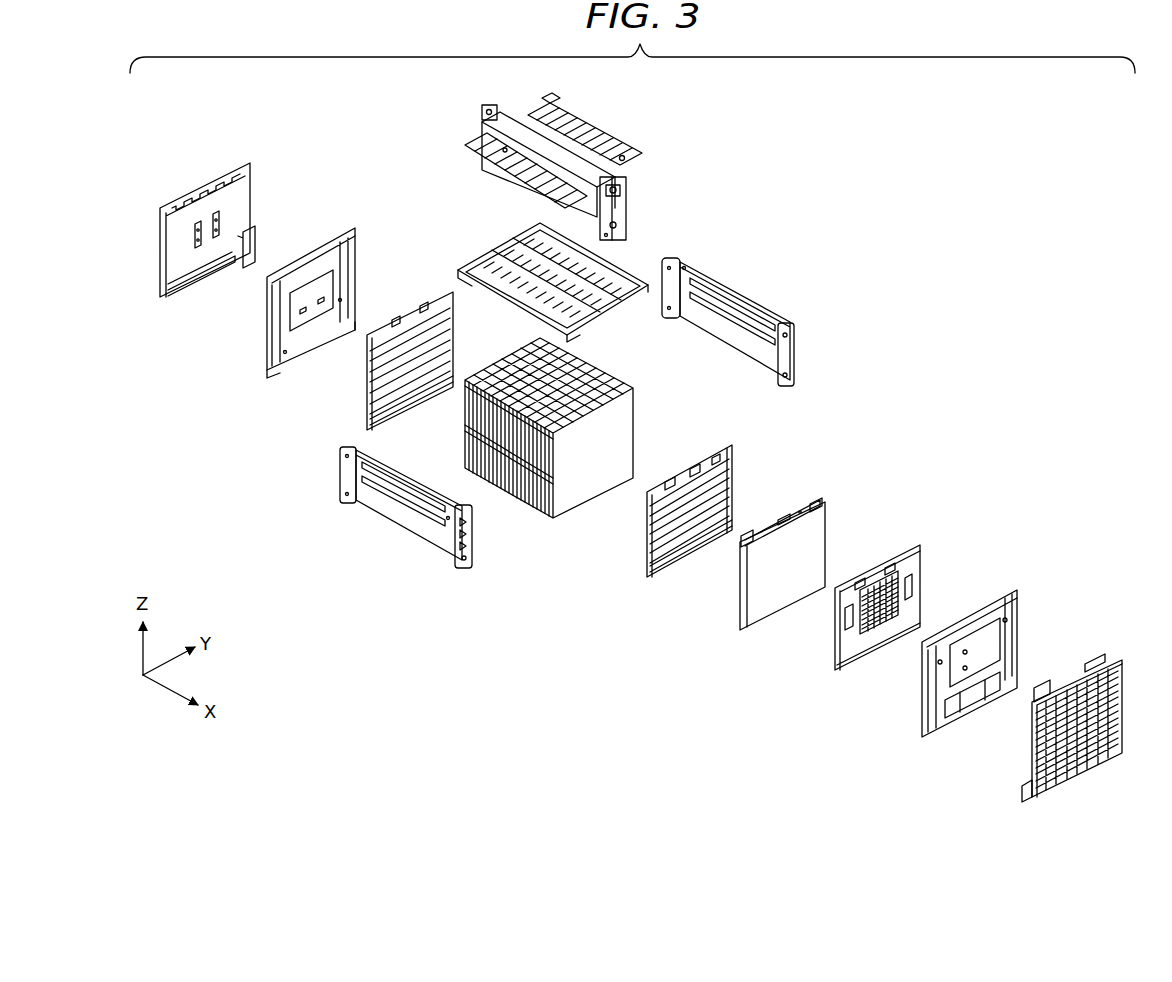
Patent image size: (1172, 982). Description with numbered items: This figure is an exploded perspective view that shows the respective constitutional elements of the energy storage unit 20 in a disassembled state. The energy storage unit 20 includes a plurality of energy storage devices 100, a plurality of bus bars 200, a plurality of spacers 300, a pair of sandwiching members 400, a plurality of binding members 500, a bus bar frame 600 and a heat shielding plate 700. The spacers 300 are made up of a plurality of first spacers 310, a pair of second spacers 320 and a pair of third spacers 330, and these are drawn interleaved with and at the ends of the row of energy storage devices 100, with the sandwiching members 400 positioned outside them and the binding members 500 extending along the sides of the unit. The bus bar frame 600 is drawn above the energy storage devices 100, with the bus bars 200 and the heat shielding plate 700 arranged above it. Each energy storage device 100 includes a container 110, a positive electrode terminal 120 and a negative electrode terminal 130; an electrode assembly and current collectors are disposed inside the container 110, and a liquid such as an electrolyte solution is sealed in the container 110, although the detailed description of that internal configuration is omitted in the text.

The energy storage unit 20 is at (920, 203).
The energy storage device 100 is at (632, 443).
The container 110 is at (757, 590).
The positive electrode terminal 120 is at (812, 506).
The negative electrode terminal 130 is at (742, 543).
The bus bar 200 is at (547, 110).
The spacer 300 is at (658, 460).
The first spacer 310 is at (657, 366).
The second spacer 320 is at (247, 170).
The third spacer 330 is at (377, 376).
The sandwiching member 400 is at (268, 297).
The binding member 500 is at (392, 533).
The bus bar frame 600 is at (483, 248).
The heat shielding plate 700 is at (632, 195).